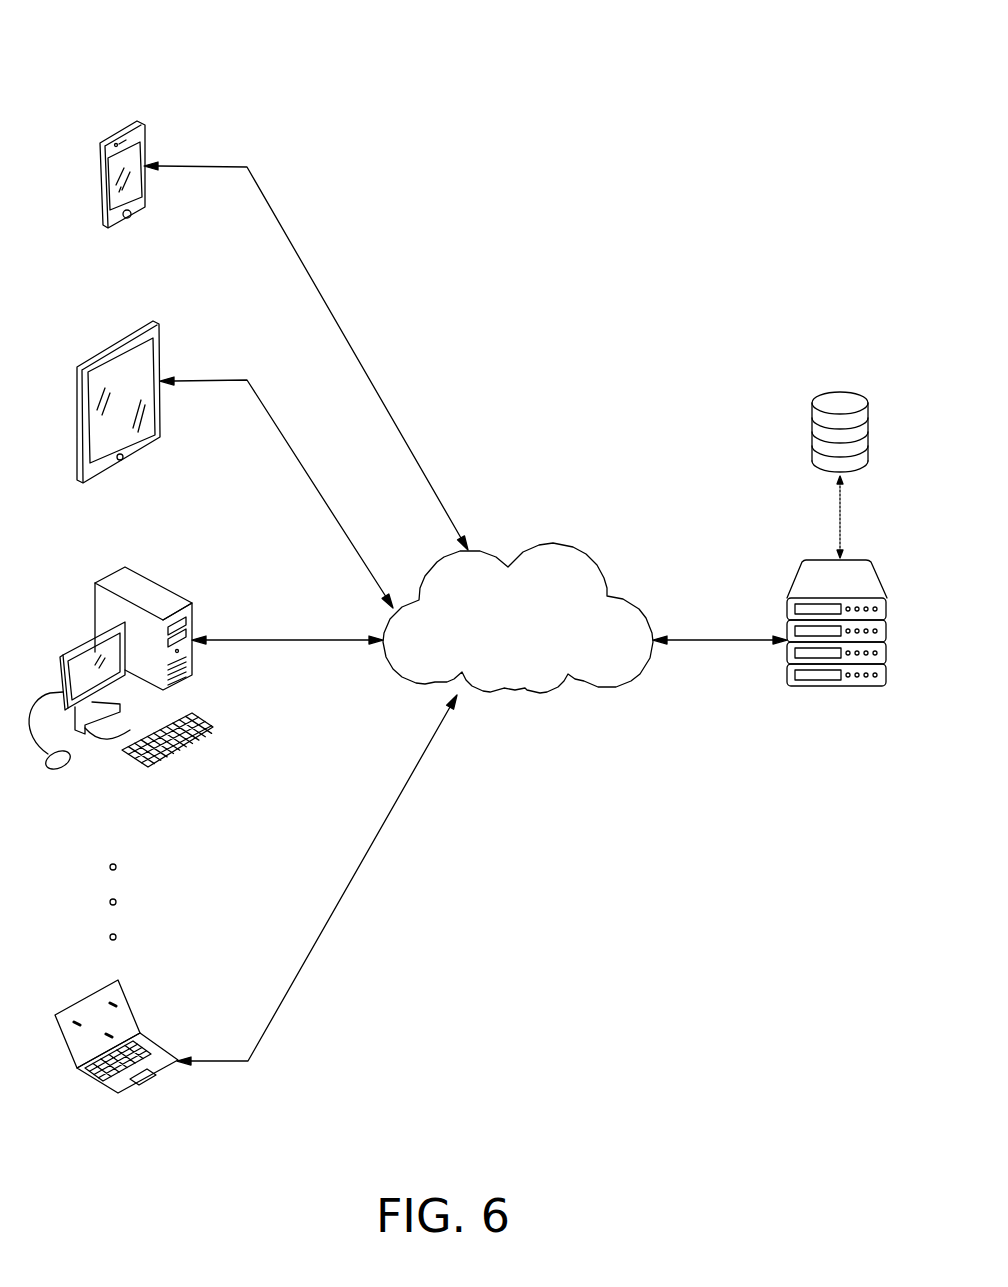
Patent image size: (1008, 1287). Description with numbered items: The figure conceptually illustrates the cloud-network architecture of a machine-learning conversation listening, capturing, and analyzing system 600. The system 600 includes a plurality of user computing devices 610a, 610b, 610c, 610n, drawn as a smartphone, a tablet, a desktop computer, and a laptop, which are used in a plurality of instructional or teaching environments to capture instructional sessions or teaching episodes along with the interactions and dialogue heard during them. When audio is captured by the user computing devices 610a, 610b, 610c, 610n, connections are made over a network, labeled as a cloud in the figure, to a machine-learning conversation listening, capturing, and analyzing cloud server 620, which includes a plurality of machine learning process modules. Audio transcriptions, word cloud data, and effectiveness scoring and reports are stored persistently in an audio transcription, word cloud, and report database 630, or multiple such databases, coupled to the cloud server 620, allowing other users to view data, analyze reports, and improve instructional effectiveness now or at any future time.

The machine-learning conversation listening, capturing, and analyzing system 600 is at (186, 44).
The user computing device 610a is at (143, 127).
The user computing device 610b is at (162, 335).
The user computing device 610c is at (192, 617).
The user computing device 610n is at (118, 980).
The machine-learning conversation listening, capturing, and analyzing cloud server 620 is at (857, 594).
The audio transcription, word cloud, and report database 630 is at (812, 440).